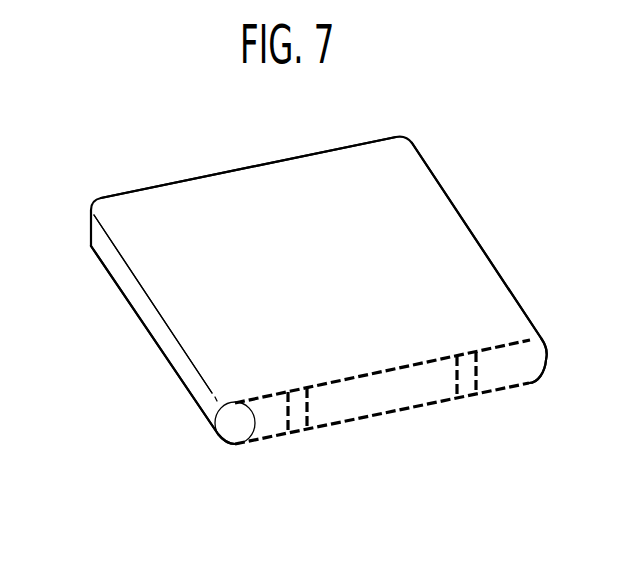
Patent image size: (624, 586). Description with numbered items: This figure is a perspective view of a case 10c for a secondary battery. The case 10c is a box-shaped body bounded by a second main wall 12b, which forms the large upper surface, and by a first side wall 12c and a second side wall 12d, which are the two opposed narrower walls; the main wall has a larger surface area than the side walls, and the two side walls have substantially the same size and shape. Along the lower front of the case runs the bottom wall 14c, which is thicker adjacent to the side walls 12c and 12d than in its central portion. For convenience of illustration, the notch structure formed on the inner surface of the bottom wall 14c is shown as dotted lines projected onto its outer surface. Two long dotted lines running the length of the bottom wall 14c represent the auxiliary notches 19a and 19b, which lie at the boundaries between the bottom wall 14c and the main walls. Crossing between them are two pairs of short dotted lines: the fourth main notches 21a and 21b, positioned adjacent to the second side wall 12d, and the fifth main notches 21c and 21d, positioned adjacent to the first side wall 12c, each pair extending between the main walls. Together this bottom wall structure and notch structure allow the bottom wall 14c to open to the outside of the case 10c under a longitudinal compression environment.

The case 10c is at (64, 175).
The second main wall 12b is at (198, 307).
The first side wall 12c is at (480, 241).
The second side wall 12d is at (173, 353).
The bottom wall 14c is at (520, 360).
The auxiliary notch 19a is at (245, 445).
The auxiliary notch 19b is at (265, 443).
The fourth main notch 21a is at (290, 413).
The fourth main notch 21b is at (308, 412).
The fifth main notch 21c is at (457, 379).
The fifth main notch 21d is at (478, 373).